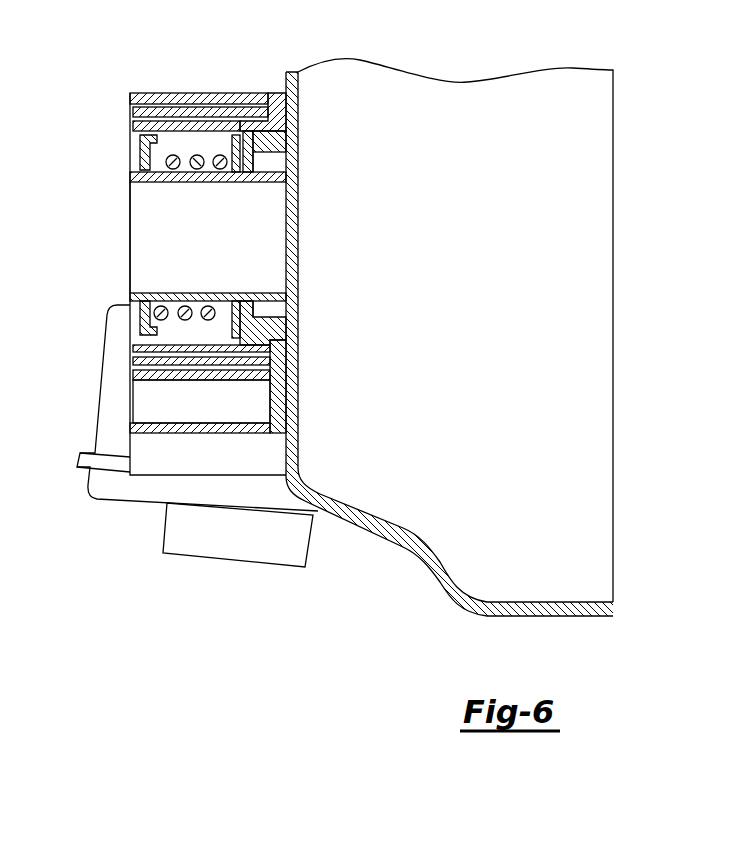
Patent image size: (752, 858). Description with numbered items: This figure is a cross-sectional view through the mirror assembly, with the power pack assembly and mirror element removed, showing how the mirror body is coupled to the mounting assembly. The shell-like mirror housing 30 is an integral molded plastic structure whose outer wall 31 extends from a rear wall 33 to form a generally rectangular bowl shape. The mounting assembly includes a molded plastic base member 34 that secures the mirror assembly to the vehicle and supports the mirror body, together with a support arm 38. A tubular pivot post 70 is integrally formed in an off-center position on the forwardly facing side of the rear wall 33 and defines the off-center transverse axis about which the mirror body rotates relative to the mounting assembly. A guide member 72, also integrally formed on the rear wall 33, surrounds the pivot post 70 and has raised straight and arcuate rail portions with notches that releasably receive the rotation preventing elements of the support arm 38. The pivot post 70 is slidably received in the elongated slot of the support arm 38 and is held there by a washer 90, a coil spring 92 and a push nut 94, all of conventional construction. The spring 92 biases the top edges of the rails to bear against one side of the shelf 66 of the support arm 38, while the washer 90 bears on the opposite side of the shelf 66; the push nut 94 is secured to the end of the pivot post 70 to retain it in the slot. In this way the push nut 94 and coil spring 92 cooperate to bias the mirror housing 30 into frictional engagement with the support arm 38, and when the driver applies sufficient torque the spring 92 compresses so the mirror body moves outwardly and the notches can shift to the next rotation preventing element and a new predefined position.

The mirror housing 30 is at (619, 612).
The outer wall 31 is at (480, 612).
The rear wall 33 is at (300, 216).
The base member 34 is at (99, 400).
The support arm 38 is at (198, 93).
The shelf 66 is at (257, 305).
The pivot post 70 is at (158, 182).
The guide member 72 is at (259, 158).
The washer 90 is at (233, 312).
The coil spring 92 is at (198, 168).
The push nut 94 is at (141, 143).